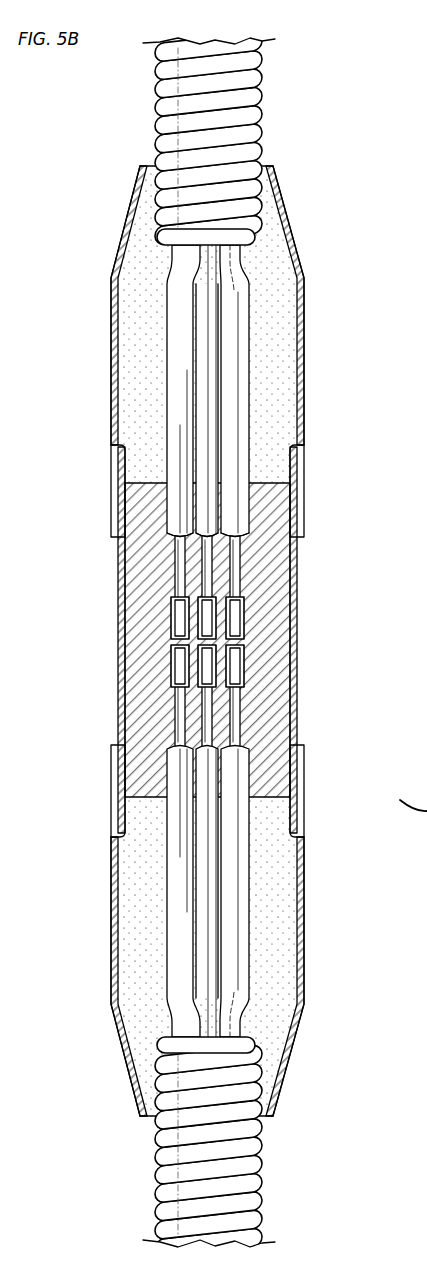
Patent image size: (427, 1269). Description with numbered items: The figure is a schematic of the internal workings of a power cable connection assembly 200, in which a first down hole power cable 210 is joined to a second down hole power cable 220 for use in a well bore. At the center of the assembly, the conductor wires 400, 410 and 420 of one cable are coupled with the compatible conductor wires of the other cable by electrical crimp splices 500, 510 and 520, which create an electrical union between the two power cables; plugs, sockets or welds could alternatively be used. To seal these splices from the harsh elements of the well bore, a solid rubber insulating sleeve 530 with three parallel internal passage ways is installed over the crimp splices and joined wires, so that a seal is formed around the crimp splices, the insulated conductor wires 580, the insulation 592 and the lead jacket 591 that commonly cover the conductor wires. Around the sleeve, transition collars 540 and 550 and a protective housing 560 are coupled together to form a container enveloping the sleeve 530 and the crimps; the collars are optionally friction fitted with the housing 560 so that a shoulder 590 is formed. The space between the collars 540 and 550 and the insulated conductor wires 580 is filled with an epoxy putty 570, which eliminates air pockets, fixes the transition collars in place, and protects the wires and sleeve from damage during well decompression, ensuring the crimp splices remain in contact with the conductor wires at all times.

The power cable connection assembly 200 is at (334, 447).
The first down hole power cable 210 is at (262, 94).
The second down hole power cable 220 is at (262, 1165).
The conductor wire 400 is at (286, 566).
The conductor wire 410 is at (170, 595).
The conductor wire 420 is at (172, 655).
The electrical crimp splice 500 is at (252, 636).
The electrical crimp splice 510 is at (171, 626).
The electrical crimp splice 520 is at (171, 676).
The insulating sleeve 530 is at (292, 690).
The transition collar 540 is at (305, 912).
The transition collar 550 is at (298, 222).
The protective housing 560 is at (296, 607).
The epoxy putty 570 is at (272, 296).
The insulated conductor wires 580 is at (160, 371).
The shoulder 590 is at (110, 782).
The lead jacket 591 is at (170, 487).
The insulation 592 is at (178, 552).